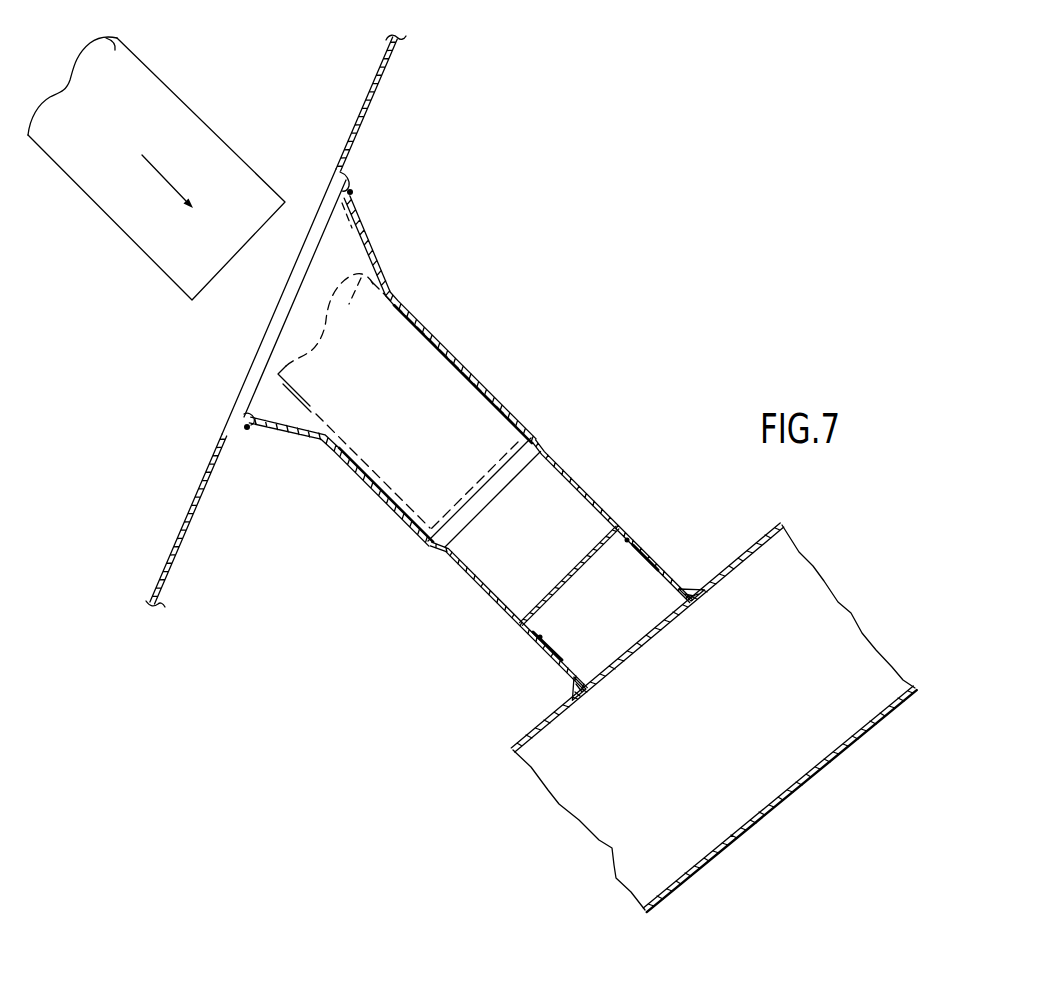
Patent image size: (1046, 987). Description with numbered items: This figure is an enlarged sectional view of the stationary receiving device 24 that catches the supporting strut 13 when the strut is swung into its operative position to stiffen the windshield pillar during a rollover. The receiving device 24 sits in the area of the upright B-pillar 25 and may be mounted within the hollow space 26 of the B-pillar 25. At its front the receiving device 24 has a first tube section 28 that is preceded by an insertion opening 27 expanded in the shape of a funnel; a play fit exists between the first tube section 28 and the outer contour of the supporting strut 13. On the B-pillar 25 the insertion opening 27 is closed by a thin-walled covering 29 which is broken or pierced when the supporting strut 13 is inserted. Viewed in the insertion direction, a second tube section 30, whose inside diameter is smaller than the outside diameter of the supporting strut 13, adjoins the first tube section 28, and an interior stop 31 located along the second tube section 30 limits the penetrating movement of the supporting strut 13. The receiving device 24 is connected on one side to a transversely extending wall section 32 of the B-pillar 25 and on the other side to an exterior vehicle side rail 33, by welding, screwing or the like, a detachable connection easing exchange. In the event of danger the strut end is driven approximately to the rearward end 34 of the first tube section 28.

The supporting strut 13 is at (105, 232).
The receiving device 24 is at (462, 410).
The B-pillar 25 is at (180, 503).
The hollow space 26 is at (386, 338).
The insertion opening 27 is at (337, 239).
The first tube section 28 is at (477, 380).
The thin-walled covering 29 is at (265, 345).
The second tube section 30 is at (607, 517).
The interior stop 31 is at (560, 583).
The wall section 32 is at (231, 441).
The exterior vehicle side rail 33 is at (680, 614).
The rearward end 34 is at (483, 500).